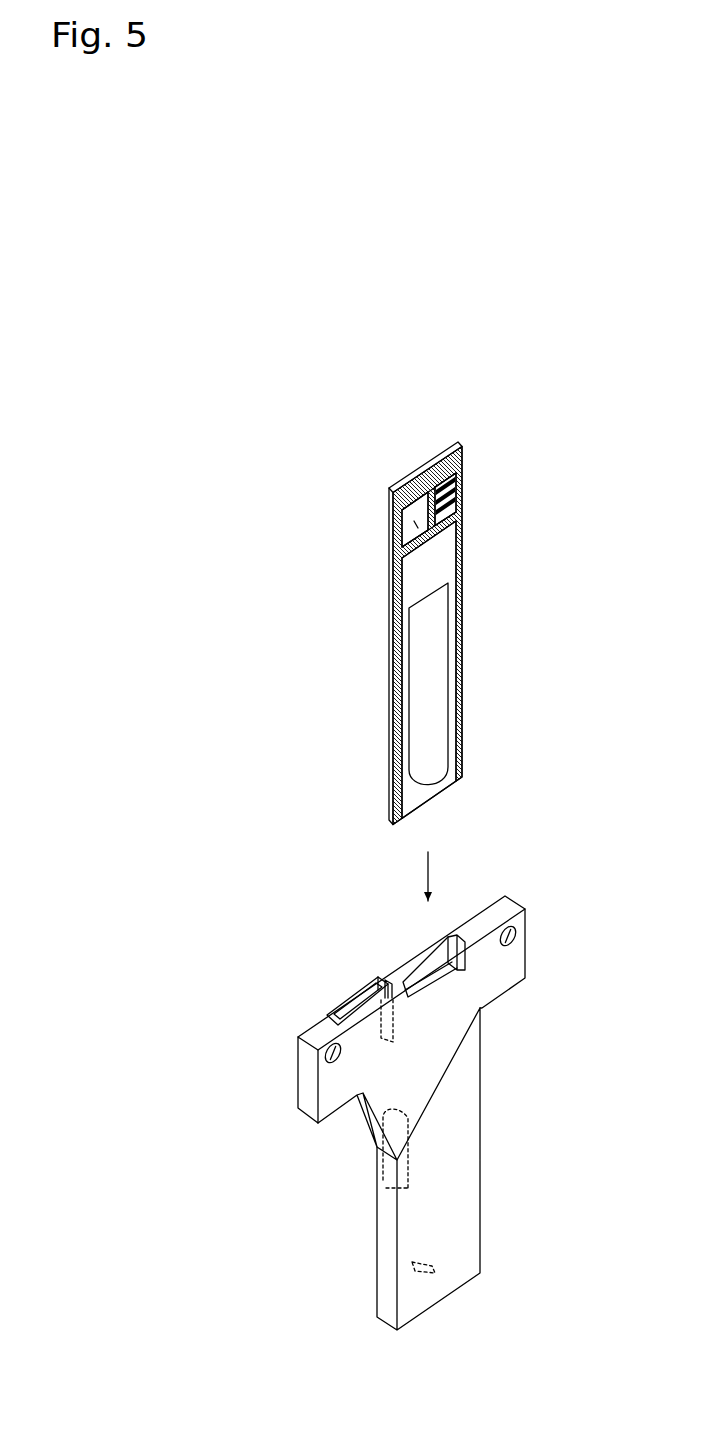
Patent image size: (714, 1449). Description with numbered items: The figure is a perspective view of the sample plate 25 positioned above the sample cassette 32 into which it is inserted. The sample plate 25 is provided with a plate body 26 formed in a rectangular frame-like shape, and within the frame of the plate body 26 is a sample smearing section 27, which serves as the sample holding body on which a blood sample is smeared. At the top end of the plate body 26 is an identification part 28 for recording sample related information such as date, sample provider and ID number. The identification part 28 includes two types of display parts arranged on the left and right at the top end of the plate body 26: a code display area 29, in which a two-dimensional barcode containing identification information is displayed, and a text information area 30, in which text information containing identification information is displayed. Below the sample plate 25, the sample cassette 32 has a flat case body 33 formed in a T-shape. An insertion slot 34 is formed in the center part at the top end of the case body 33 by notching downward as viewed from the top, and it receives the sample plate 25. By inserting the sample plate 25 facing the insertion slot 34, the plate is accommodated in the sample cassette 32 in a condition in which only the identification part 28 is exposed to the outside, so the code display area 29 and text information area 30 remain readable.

The sample plate 25 is at (451, 633).
The plate body 26 is at (463, 653).
The sample smearing section 27 is at (437, 742).
The identification part 28 is at (510, 507).
The code display area 29 is at (437, 547).
The text information area 30 is at (463, 478).
The sample cassette 32 is at (458, 1111).
The case body 33 is at (458, 1137).
The insertion slot 34 is at (423, 972).